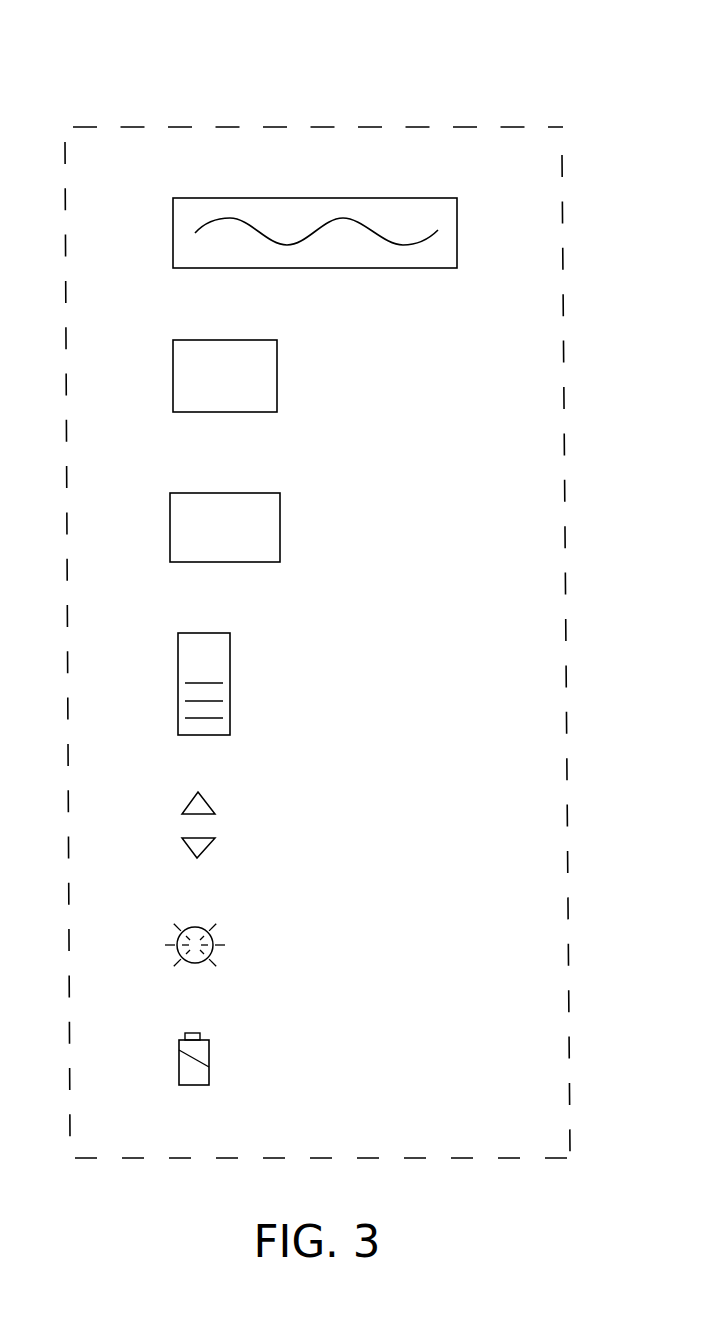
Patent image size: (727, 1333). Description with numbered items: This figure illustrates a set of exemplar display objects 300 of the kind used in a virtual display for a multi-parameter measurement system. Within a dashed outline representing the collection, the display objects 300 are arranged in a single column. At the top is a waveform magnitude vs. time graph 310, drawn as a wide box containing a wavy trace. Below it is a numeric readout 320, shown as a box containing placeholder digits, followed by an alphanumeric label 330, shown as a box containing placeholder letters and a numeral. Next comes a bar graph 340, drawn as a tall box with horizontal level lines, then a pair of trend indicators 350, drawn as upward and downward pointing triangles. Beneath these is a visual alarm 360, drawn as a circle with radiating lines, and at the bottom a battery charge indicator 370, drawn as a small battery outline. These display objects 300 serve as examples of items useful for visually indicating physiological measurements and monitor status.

The display objects 300 is at (313, 57).
The waveform magnitude vs. time graph 310 is at (420, 198).
The numeric readout 320 is at (227, 340).
The alphanumeric label 330 is at (242, 493).
The bar graph 340 is at (230, 665).
The trend indicators 350 is at (207, 805).
The visual alarm 360 is at (200, 927).
The battery charge indicator 370 is at (209, 1045).